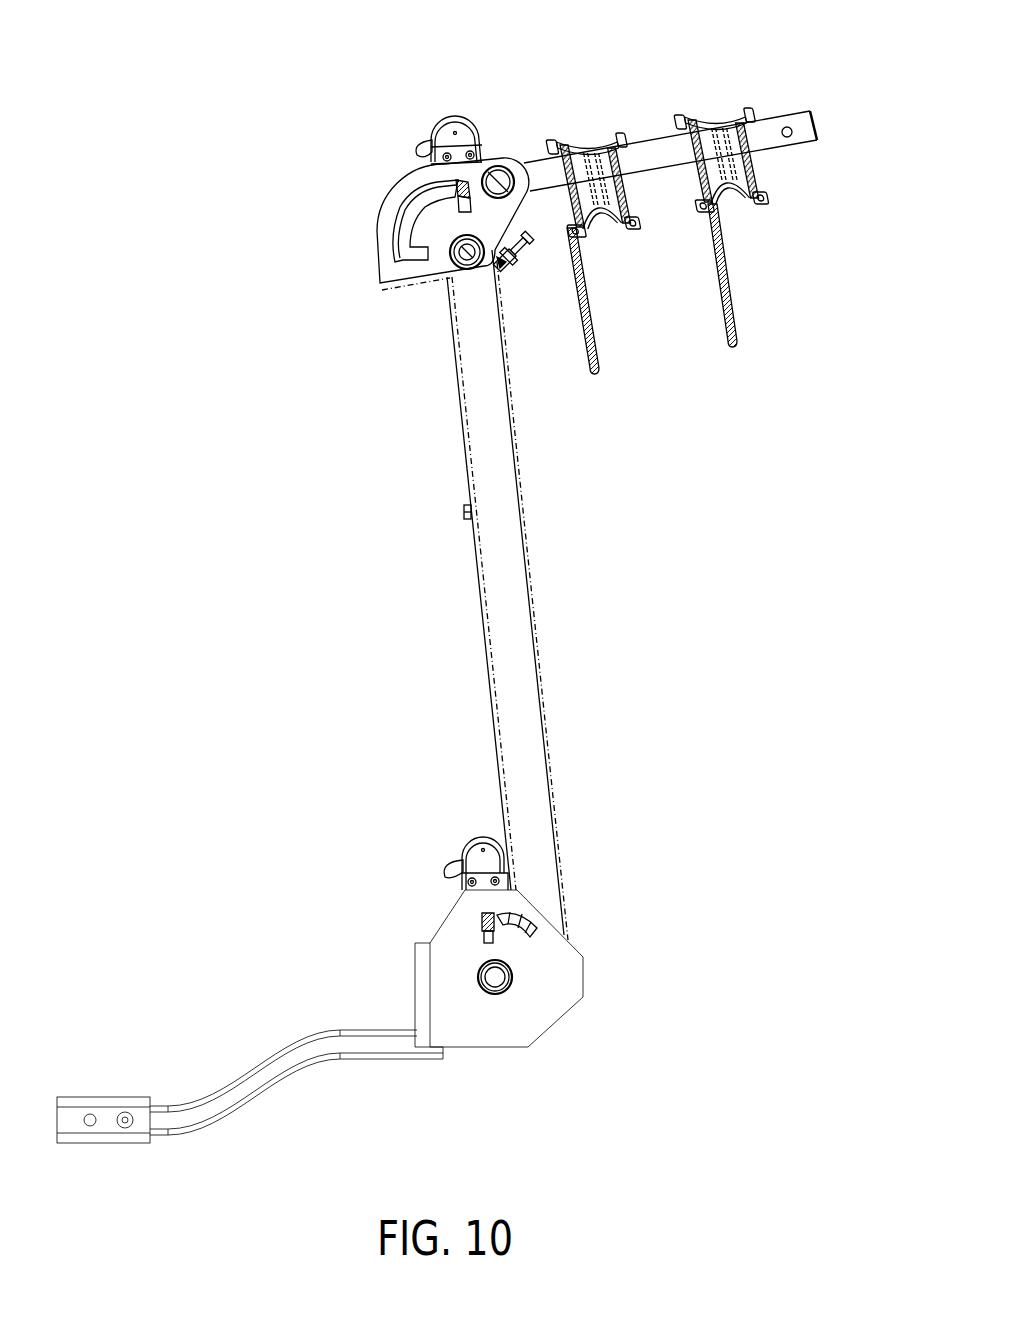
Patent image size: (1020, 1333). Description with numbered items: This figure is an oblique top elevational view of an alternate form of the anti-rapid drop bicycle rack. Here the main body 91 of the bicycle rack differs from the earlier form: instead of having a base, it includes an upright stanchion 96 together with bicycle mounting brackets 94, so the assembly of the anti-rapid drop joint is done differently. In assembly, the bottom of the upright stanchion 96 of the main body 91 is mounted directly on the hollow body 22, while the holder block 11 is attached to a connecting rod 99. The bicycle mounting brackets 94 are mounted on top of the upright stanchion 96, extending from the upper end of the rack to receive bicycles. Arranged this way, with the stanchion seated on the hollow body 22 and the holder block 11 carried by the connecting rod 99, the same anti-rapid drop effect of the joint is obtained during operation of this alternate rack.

The bicycle mounting brackets 94 is at (589, 142).
The main body 91 is at (529, 528).
The upright stanchion 96 is at (537, 662).
The hollow body 22 is at (447, 889).
The holder block 11 is at (449, 923).
The connecting rod 99 is at (259, 1098).